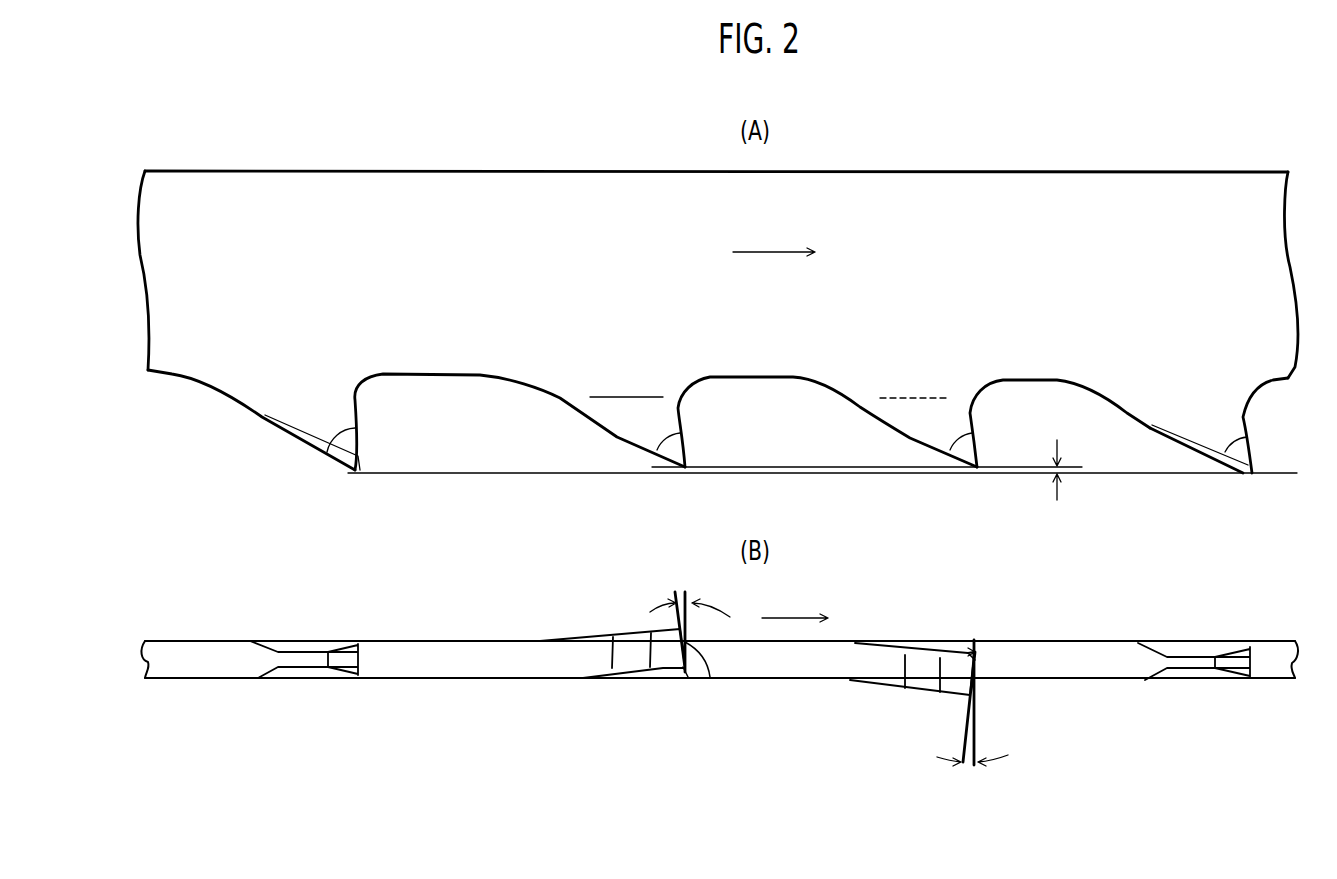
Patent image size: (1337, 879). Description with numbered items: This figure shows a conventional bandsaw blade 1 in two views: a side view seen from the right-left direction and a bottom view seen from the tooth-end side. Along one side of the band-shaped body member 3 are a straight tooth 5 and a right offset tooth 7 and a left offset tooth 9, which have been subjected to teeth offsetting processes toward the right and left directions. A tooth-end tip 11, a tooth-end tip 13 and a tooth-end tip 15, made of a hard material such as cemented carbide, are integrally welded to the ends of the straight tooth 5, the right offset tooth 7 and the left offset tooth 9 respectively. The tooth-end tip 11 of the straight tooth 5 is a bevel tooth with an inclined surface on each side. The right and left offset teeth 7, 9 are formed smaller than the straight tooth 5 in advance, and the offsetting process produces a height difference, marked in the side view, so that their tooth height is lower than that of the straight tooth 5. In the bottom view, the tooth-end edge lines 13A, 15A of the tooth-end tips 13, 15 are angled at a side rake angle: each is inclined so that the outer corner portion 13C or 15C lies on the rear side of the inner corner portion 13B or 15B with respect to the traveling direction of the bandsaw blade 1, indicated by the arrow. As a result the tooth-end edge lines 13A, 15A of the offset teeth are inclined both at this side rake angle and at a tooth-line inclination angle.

The bandsaw blade 1 is at (727, 423).
The band-shaped body member 3 is at (1133, 171).
The straight tooth 5 is at (765, 556).
The right offset tooth 7 is at (994, 584).
The left offset tooth 9 is at (758, 566).
The tooth-end tip 11 is at (1245, 452).
The tooth-end tip 13 is at (973, 452).
The tooth-end edge line 13A is at (980, 663).
The inner corner portion 13B is at (973, 652).
The outer corner portion 13C is at (953, 687).
The tooth-end tip 15 is at (675, 451).
The tooth-end edge line 15A is at (705, 673).
The inner corner portion 15B is at (685, 677).
The outer corner portion 15C is at (680, 630).